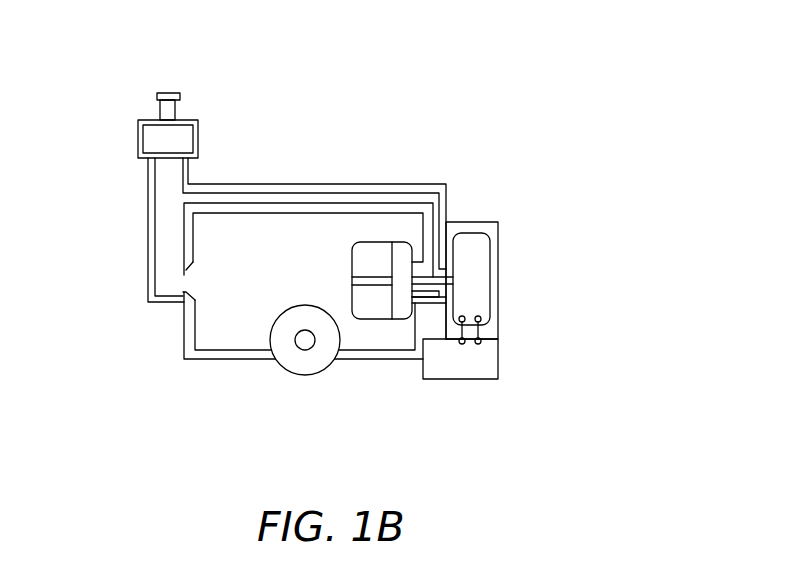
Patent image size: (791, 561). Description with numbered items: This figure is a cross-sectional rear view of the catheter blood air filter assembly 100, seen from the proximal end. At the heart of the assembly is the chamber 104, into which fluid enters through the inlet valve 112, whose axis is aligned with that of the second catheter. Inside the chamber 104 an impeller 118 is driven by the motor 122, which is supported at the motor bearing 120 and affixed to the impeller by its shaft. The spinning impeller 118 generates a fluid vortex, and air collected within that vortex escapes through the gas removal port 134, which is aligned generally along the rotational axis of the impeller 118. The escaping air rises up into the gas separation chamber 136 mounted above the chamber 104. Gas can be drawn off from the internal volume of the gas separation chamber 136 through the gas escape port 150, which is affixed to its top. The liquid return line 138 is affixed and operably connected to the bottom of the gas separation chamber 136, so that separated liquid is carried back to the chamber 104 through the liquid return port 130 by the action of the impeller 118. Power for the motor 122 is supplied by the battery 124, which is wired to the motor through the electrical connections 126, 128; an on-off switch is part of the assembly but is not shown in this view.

The catheter blood air filter assembly 100 is at (175, 442).
The chamber 104 is at (242, 238).
The inlet valve 112 is at (295, 358).
The impeller 118 is at (400, 255).
The motor bearing 120 is at (447, 261).
The motor 122 is at (473, 270).
The battery 124 is at (450, 360).
The electrical connection 126 is at (478, 328).
The electrical connection 128 is at (477, 340).
The liquid return port 130 is at (422, 292).
The gas removal port 134 is at (188, 283).
The gas separation chamber 136 is at (173, 143).
The liquid return line 138 is at (343, 192).
The gas escape port 150 is at (171, 92).